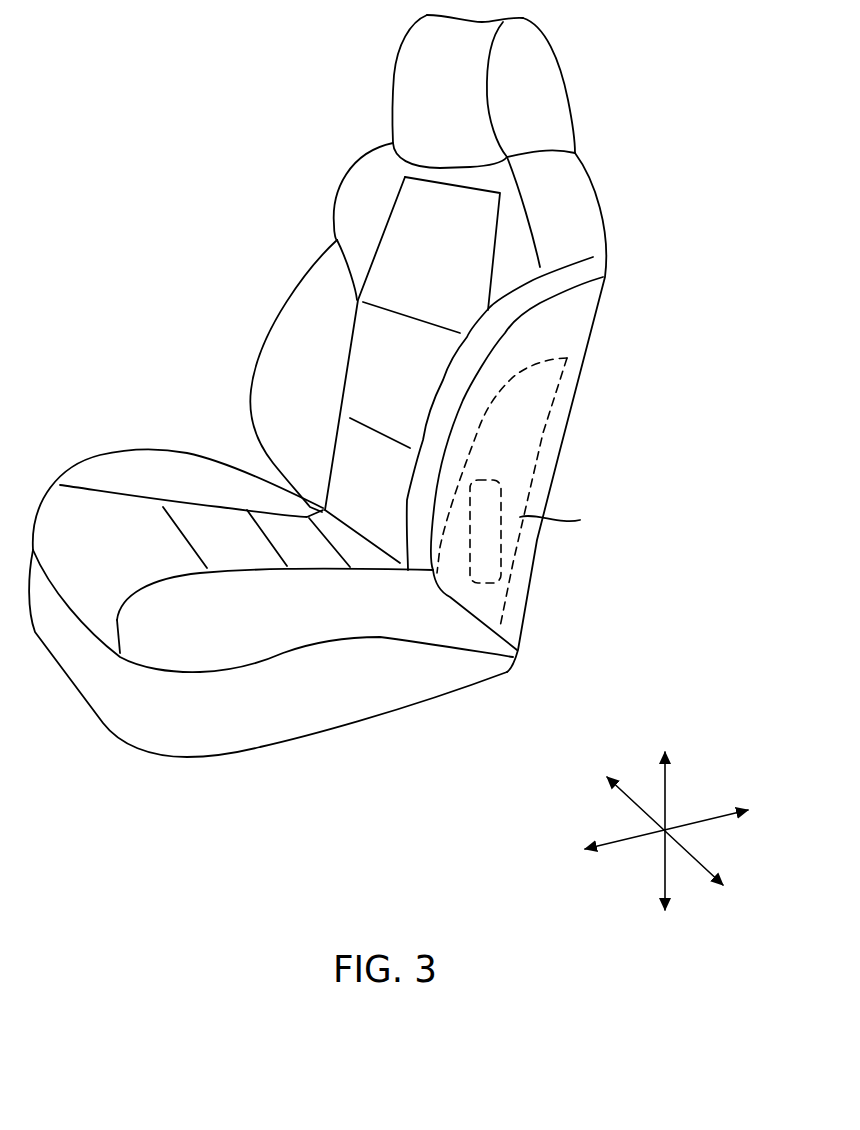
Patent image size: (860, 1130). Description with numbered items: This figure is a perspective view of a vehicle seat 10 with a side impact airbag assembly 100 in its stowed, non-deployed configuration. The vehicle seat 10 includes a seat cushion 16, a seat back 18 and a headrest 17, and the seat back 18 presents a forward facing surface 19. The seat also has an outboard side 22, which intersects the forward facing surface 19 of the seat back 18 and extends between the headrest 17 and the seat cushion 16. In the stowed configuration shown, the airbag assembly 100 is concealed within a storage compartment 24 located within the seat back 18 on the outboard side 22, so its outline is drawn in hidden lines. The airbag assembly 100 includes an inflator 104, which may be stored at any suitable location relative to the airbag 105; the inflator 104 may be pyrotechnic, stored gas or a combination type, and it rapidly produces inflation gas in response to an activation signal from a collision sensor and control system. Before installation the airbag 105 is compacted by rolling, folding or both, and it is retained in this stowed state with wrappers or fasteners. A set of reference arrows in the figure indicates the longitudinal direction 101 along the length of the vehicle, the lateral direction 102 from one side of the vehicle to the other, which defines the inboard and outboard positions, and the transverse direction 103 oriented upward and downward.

The vehicle seat 10 is at (117, 121).
The seat cushion 16 is at (287, 643).
The headrest 17 is at (547, 87).
The seat back 18 is at (610, 217).
The forward facing surface 19 is at (380, 370).
The outboard side 22 is at (577, 323).
The storage compartment 24 is at (527, 453).
The airbag assembly 100 is at (633, 419).
The longitudinal direction 101 is at (718, 812).
The lateral direction 102 is at (698, 862).
The transverse direction 103 is at (665, 793).
The inflator 104 is at (488, 558).
The airbag 105 is at (571, 520).